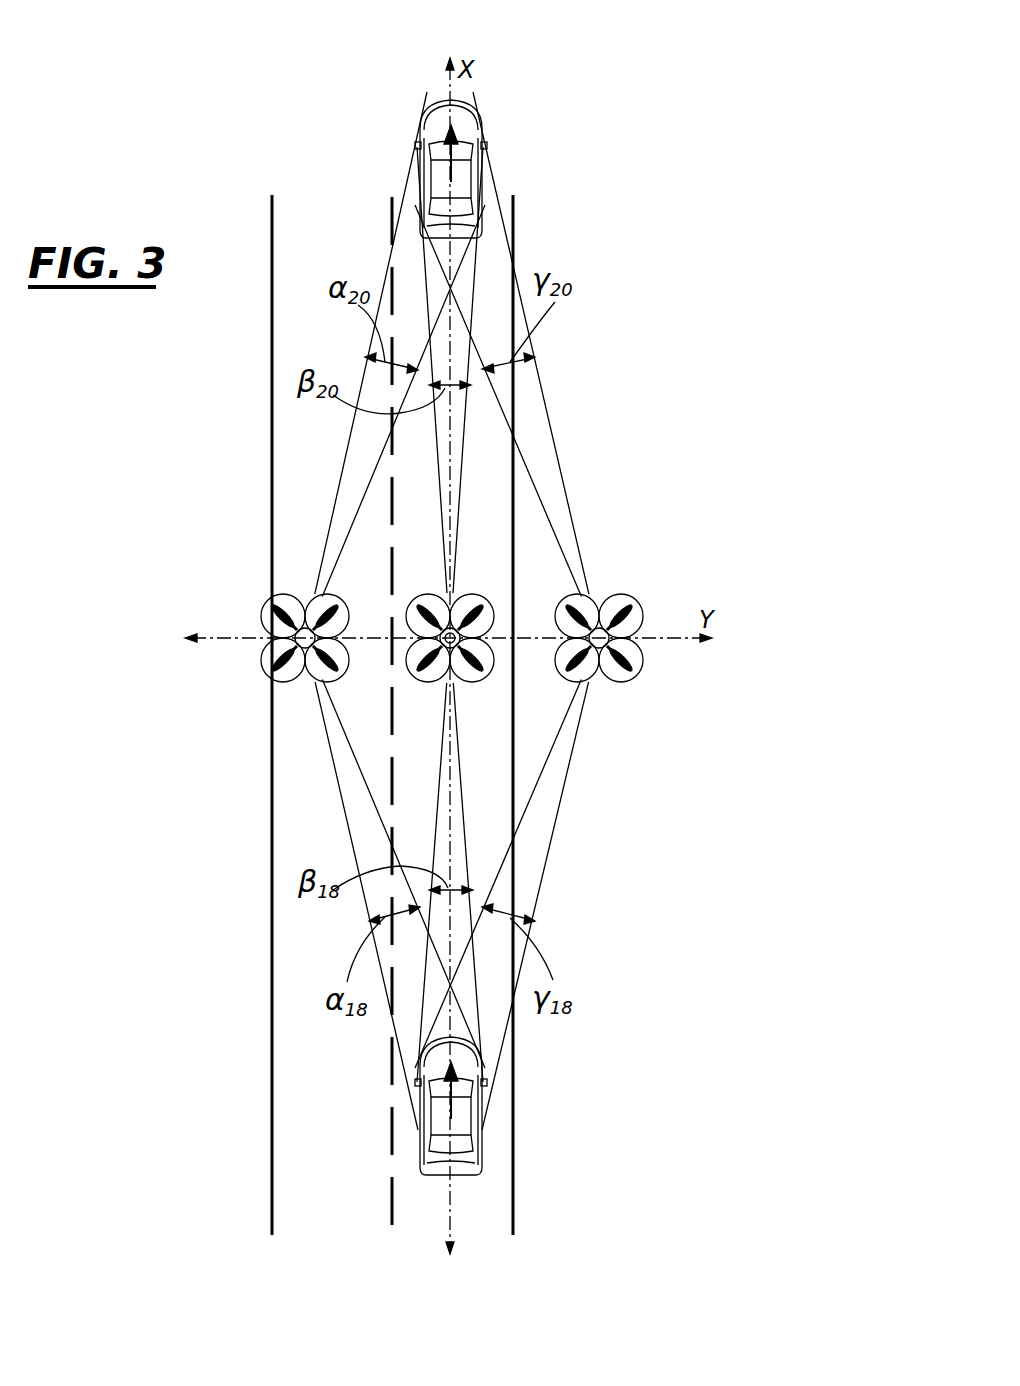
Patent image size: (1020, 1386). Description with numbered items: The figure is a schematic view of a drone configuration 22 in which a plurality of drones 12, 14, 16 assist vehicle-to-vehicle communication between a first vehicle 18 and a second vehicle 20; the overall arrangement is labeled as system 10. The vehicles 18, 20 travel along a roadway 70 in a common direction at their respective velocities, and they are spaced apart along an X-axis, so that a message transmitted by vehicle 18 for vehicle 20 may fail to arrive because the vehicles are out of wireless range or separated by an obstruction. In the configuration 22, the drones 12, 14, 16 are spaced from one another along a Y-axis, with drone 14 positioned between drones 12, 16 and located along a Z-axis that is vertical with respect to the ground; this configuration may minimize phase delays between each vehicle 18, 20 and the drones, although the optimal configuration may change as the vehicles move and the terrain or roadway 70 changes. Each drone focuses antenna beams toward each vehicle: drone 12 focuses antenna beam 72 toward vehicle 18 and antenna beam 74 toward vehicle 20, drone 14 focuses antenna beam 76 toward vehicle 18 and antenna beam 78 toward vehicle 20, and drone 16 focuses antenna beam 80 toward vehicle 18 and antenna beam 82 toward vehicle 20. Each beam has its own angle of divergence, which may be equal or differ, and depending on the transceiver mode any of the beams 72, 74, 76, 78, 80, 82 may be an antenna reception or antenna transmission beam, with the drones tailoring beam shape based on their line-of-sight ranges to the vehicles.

The vehicle monitoring system 10 is at (194, 585).
The drone 12 is at (292, 683).
The drone 14 is at (468, 589).
The drone 16 is at (612, 683).
The vehicle 18 is at (413, 1130).
The vehicle 20 is at (416, 131).
The drone configuration 22 is at (303, 534).
The roadway 70 is at (272, 362).
The antenna beam 72 is at (343, 815).
The antenna beam 74 is at (345, 462).
The antenna beam 76 is at (467, 842).
The antenna beam 78 is at (465, 433).
The antenna beam 80 is at (560, 815).
The antenna beam 82 is at (557, 462).